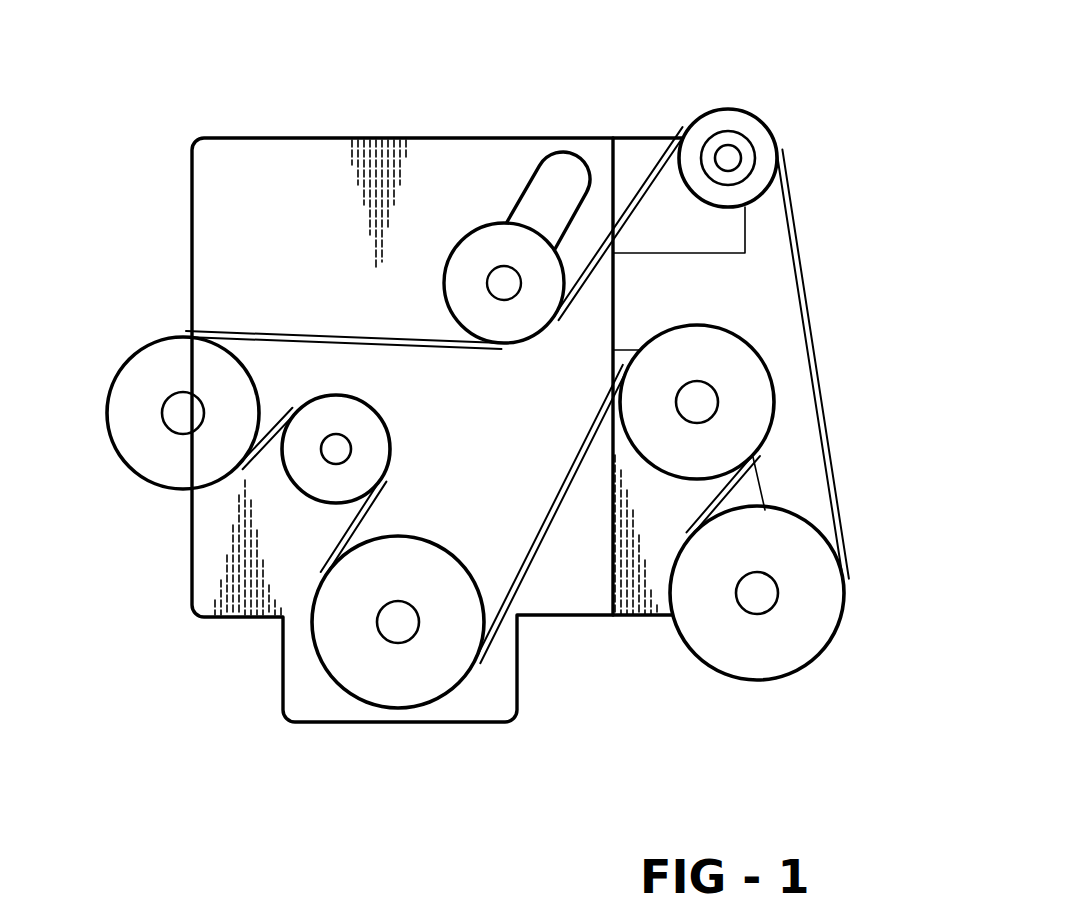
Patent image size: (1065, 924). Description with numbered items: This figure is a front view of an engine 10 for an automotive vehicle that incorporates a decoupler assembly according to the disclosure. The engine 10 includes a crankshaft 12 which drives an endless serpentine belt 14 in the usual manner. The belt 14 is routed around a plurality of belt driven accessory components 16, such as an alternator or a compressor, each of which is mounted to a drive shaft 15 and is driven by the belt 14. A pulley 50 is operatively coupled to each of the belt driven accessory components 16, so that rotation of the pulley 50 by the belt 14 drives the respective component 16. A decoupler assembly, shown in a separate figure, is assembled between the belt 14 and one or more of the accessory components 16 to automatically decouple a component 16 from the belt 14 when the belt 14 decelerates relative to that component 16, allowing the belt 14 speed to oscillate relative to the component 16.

The engine 10 is at (160, 163).
The crankshaft 12 is at (393, 628).
The endless serpentine belt 14 is at (532, 562).
The drive shaft 15 is at (733, 160).
The belt driven accessory components 16 is at (745, 125).
The pulley 50 is at (757, 219).